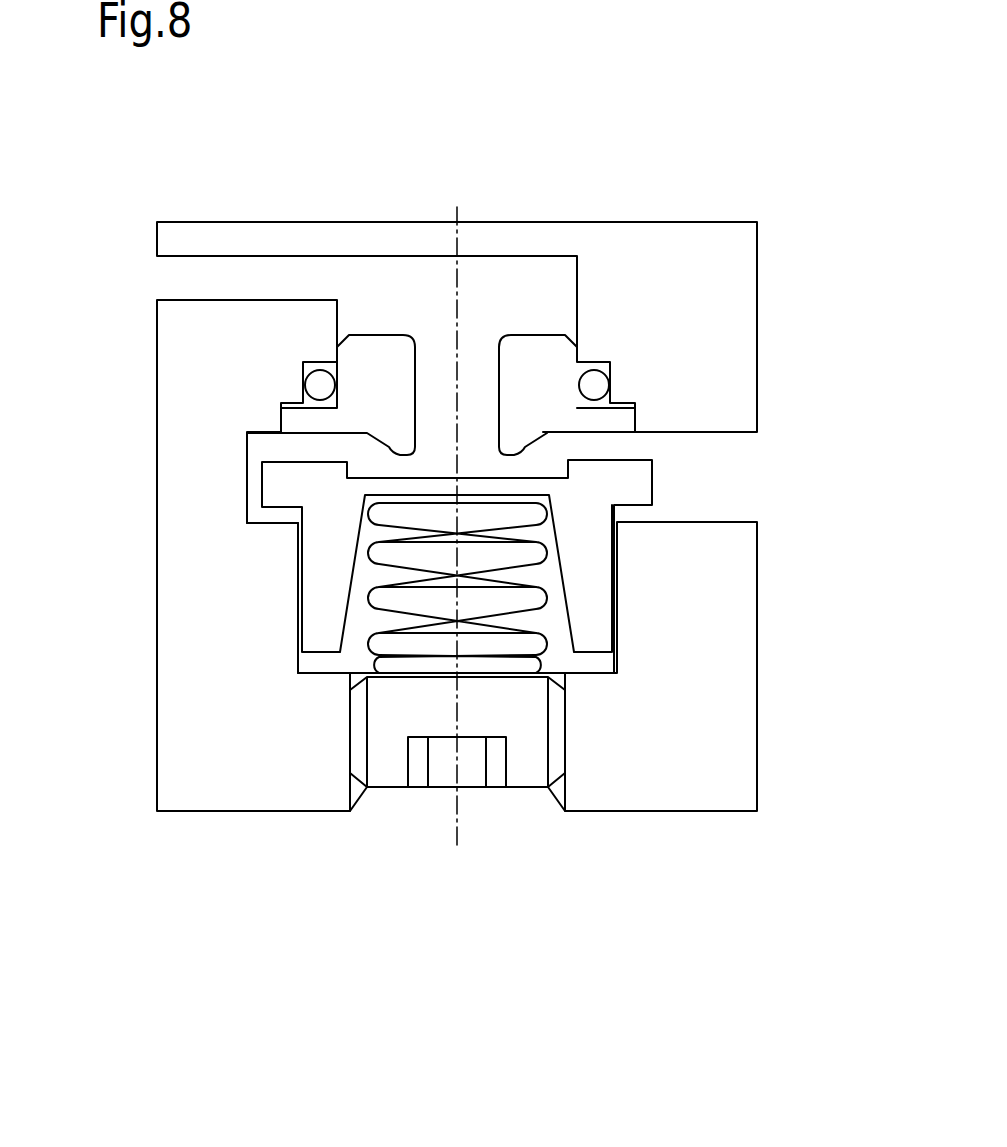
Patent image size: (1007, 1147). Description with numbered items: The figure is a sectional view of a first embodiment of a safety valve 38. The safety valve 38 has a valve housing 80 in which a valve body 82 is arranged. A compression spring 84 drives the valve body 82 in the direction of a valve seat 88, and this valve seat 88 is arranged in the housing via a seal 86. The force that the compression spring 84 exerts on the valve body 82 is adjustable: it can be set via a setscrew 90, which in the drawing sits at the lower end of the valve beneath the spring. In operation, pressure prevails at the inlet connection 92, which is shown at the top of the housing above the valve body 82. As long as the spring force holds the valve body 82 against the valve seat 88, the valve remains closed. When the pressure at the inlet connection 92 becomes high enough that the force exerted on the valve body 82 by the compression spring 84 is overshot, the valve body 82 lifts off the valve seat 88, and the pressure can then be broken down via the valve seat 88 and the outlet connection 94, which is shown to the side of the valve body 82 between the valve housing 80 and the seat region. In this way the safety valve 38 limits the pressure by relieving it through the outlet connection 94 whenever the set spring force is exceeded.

The safety valve 38 is at (272, 880).
The valve housing 80 is at (698, 793).
The valve body 82 is at (652, 491).
The compression spring 84 is at (368, 640).
The seal 86 is at (594, 383).
The valve seat 88 is at (393, 448).
The setscrew 90 is at (520, 775).
The inlet connection 92 is at (172, 279).
The outlet connection 94 is at (740, 476).